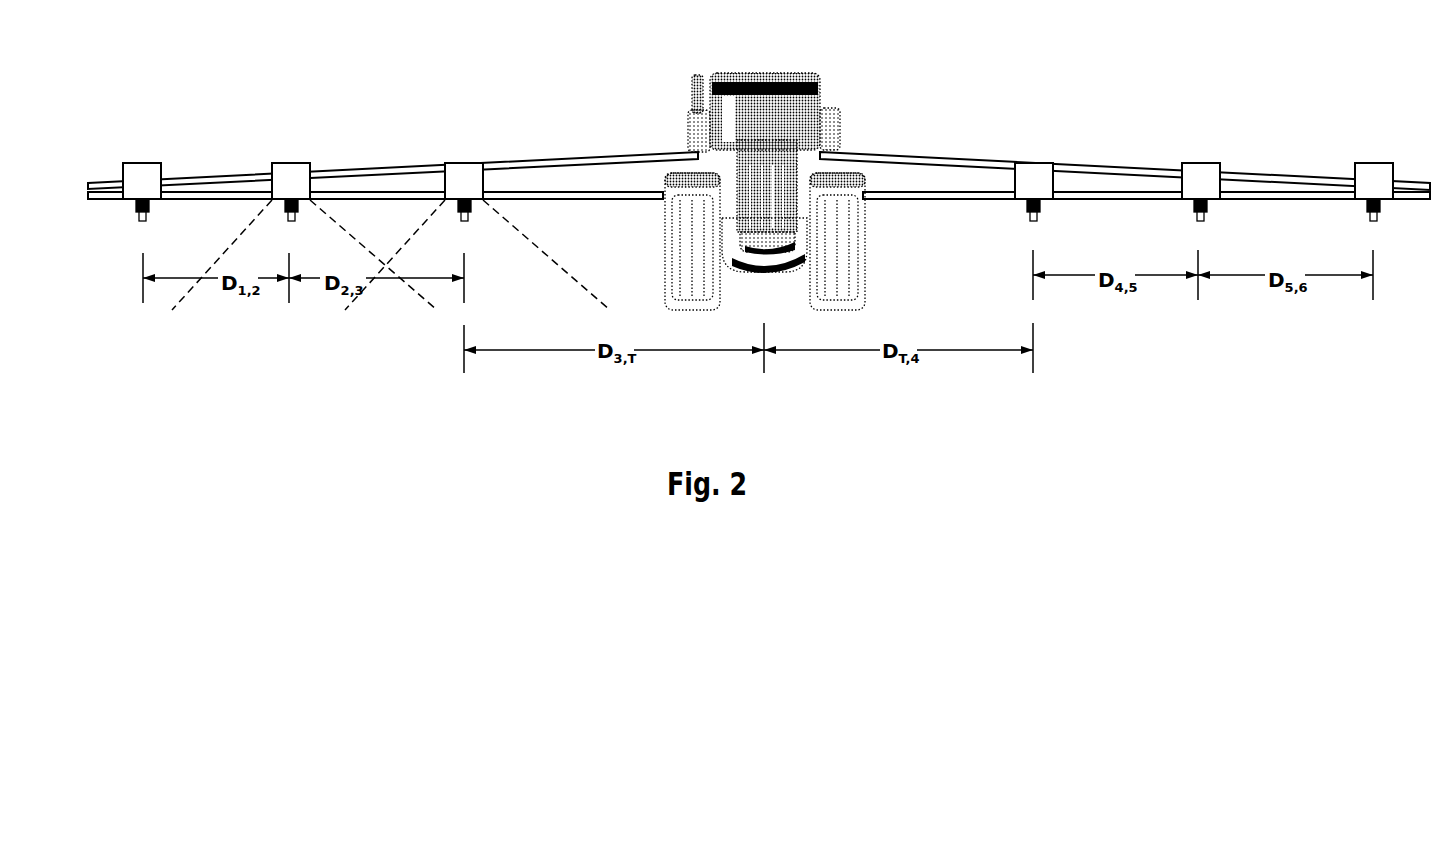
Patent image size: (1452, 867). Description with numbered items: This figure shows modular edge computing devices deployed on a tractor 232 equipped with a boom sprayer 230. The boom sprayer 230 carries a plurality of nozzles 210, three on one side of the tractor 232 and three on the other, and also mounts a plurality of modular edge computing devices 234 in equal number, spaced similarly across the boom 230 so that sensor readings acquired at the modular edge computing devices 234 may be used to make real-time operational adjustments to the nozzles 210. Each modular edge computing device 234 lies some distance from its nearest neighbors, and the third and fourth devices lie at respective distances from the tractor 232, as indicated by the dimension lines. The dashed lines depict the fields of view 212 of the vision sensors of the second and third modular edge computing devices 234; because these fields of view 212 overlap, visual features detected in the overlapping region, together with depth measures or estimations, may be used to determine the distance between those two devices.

The nozzle 210 is at (149, 206).
The field of view 212 is at (246, 235).
The boom sprayer 230 is at (603, 155).
The tractor 232 is at (802, 75).
The modular edge computing device 234 is at (144, 163).